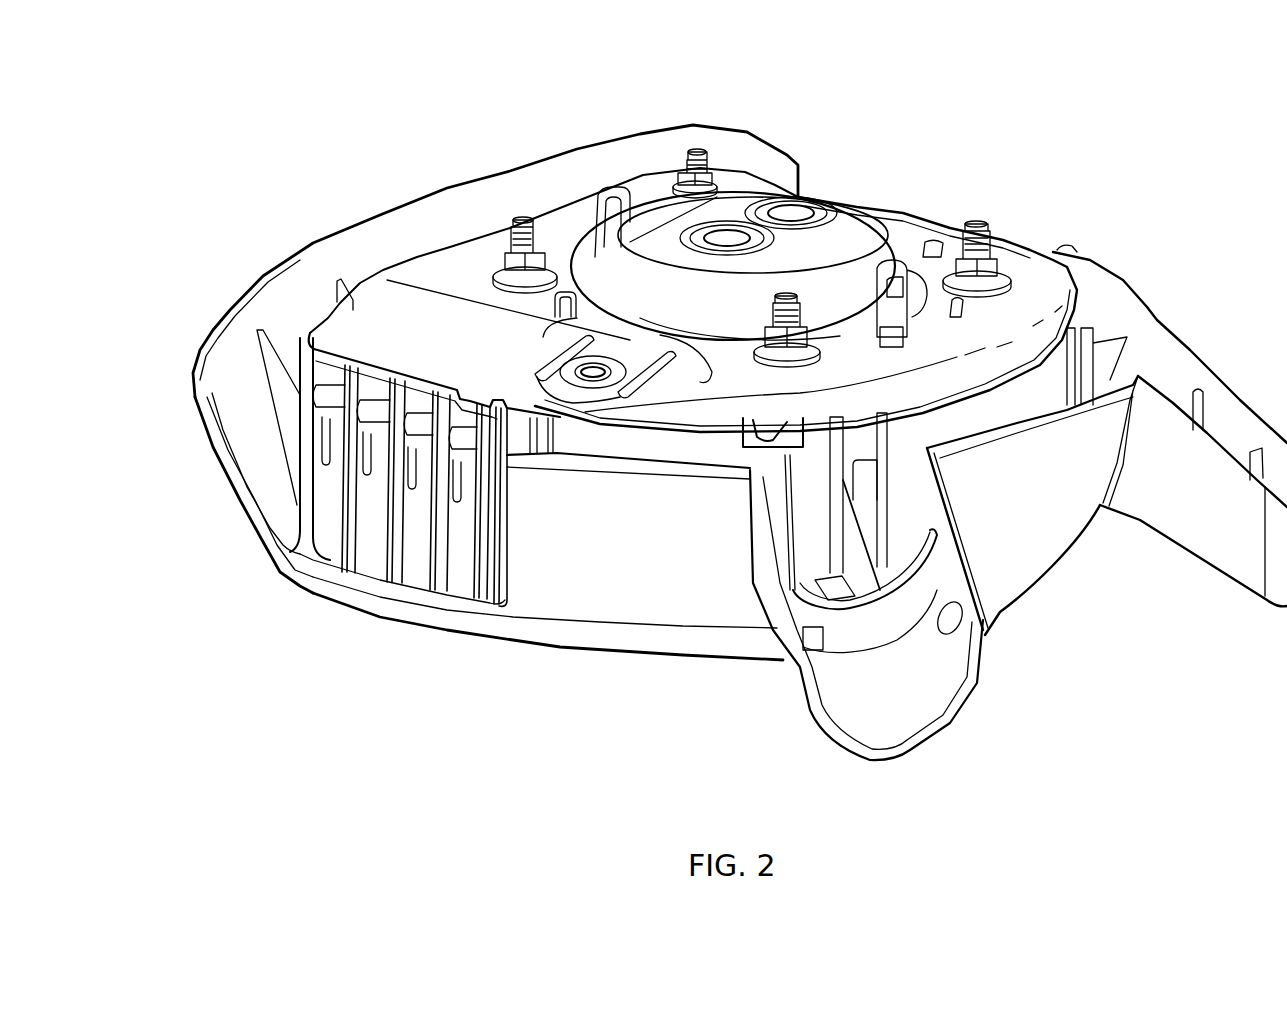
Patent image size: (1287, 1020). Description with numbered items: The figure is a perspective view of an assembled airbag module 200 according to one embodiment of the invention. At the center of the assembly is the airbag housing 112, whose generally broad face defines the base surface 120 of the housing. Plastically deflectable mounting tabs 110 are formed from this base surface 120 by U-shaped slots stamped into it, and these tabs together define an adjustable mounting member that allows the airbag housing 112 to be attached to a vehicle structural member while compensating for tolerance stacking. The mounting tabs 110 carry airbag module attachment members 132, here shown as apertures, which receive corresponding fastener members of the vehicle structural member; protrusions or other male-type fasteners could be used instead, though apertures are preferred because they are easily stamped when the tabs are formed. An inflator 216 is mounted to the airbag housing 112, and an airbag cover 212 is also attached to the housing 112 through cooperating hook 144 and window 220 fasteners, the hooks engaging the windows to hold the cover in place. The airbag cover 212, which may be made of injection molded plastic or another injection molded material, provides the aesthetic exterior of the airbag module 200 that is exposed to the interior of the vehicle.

The airbag module 200 is at (1130, 182).
The mounting tabs 110 is at (597, 383).
The airbag housing 112 is at (1050, 291).
The base surface 120 is at (447, 263).
The airbag module attachment members 132 is at (547, 390).
The hook 144 is at (325, 405).
The airbag cover 212 is at (677, 600).
The inflator 216 is at (848, 228).
The window 220 is at (440, 375).